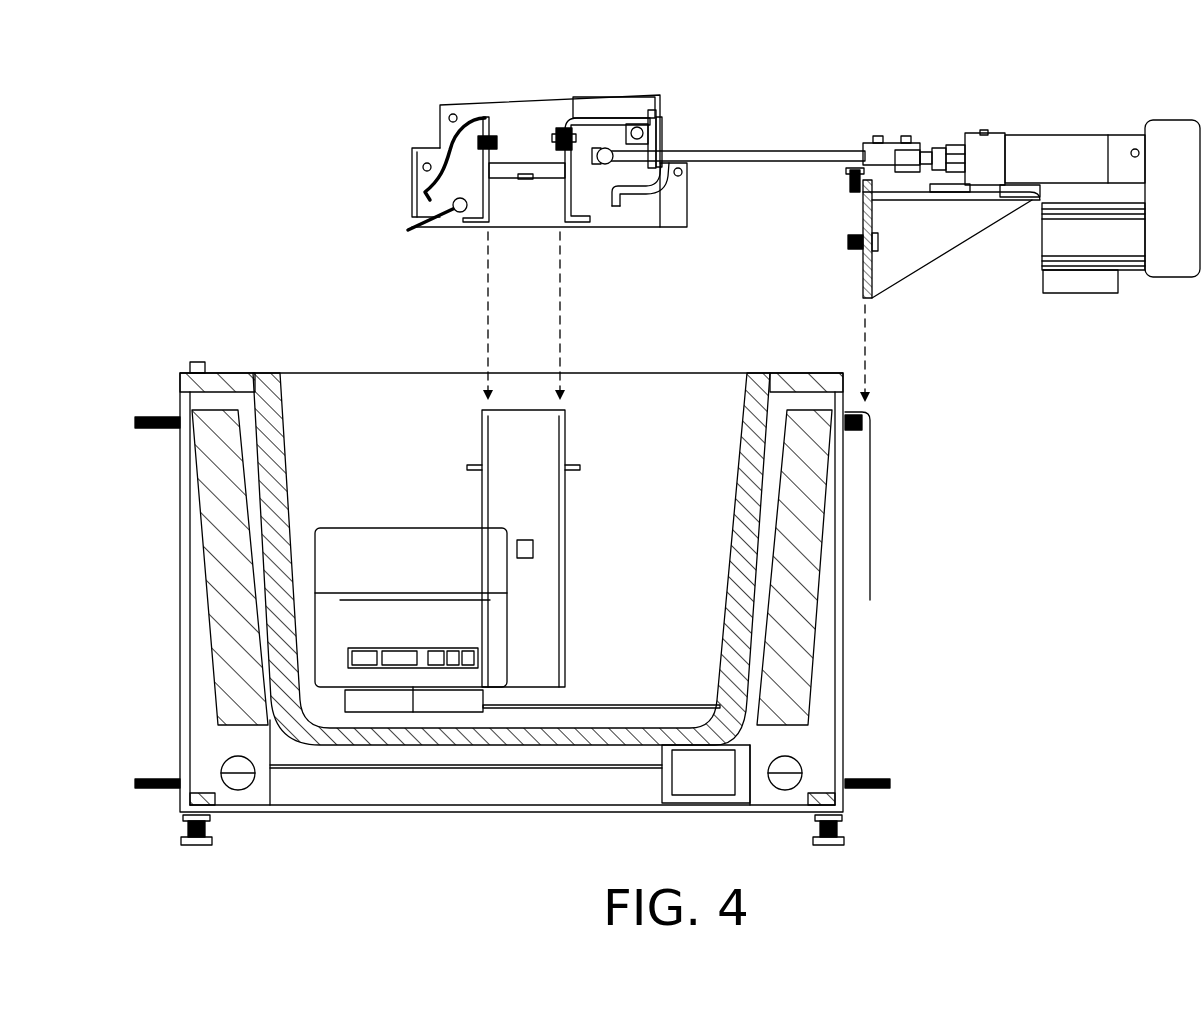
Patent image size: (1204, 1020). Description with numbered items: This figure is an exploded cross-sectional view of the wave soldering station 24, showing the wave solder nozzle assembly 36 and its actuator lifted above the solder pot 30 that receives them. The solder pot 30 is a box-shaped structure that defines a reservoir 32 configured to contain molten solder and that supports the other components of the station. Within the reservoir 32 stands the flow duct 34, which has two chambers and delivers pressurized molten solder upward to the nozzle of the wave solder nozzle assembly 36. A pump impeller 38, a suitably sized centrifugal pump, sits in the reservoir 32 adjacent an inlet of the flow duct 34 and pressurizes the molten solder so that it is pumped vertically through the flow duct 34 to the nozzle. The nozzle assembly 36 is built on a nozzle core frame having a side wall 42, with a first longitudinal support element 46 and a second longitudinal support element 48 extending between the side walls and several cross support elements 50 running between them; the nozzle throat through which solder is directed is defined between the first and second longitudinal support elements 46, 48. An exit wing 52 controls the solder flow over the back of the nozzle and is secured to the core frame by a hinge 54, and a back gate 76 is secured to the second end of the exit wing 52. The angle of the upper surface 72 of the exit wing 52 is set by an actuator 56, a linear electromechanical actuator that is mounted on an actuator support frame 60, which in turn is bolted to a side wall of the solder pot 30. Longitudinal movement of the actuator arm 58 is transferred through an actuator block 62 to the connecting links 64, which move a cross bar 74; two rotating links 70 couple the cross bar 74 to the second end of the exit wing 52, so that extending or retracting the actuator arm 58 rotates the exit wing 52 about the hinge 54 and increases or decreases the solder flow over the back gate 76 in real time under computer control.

The wave soldering station 24 is at (318, 130).
The solder pot 30 is at (575, 815).
The reservoir 32 is at (262, 528).
The flow duct 34 is at (568, 505).
The wave solder nozzle assembly 36 is at (455, 100).
The pump impeller 38 is at (455, 650).
The side wall 42 is at (505, 128).
The first longitudinal support element 46 is at (472, 225).
The second longitudinal support element 48 is at (583, 226).
The cross support element 50 is at (525, 180).
The exit wing 52 is at (600, 118).
The hinge 54 is at (565, 132).
The actuator 56 is at (1095, 140).
The actuator arm 58 is at (952, 142).
The actuator support frame 60 is at (922, 250).
The actuator block 62 is at (905, 140).
The connecting links 64 is at (820, 150).
The rotating links 70 is at (650, 130).
The upper surface 72 is at (652, 125).
The cross bar 74 is at (617, 198).
The back gate 76 is at (662, 140).